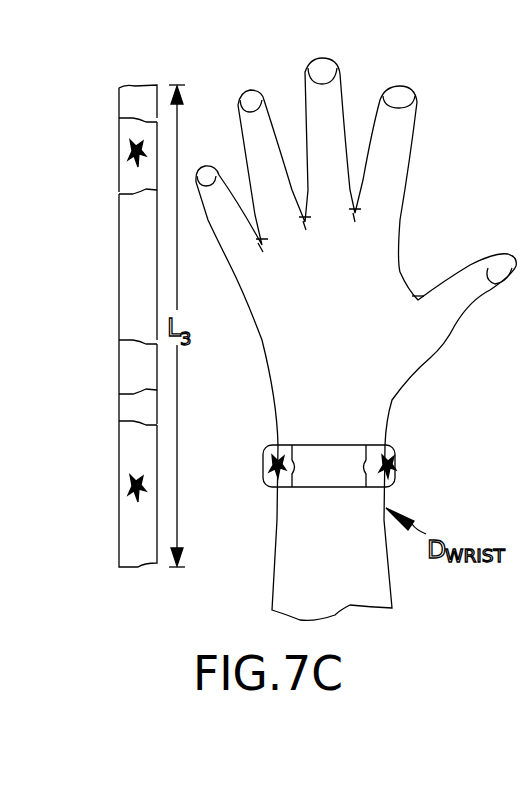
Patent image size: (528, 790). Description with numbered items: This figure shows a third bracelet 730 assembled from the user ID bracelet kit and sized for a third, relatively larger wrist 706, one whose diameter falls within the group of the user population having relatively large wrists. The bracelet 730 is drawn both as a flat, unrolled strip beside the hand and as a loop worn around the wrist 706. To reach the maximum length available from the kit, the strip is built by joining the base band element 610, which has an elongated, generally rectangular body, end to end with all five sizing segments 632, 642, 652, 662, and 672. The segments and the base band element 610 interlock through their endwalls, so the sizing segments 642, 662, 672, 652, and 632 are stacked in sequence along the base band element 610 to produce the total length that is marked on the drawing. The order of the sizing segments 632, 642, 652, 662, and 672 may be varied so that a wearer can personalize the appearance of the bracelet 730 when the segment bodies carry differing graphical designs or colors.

The larger wrist 706 is at (351, 591).
The third bracelet 730 is at (438, 457).
The sizing segment 642 is at (88, 100).
The sizing segment 662 is at (88, 174).
The base band element 610 is at (88, 274).
The sizing segment 672 is at (88, 364).
The sizing segment 652 is at (88, 404).
The sizing segment 632 is at (88, 486).